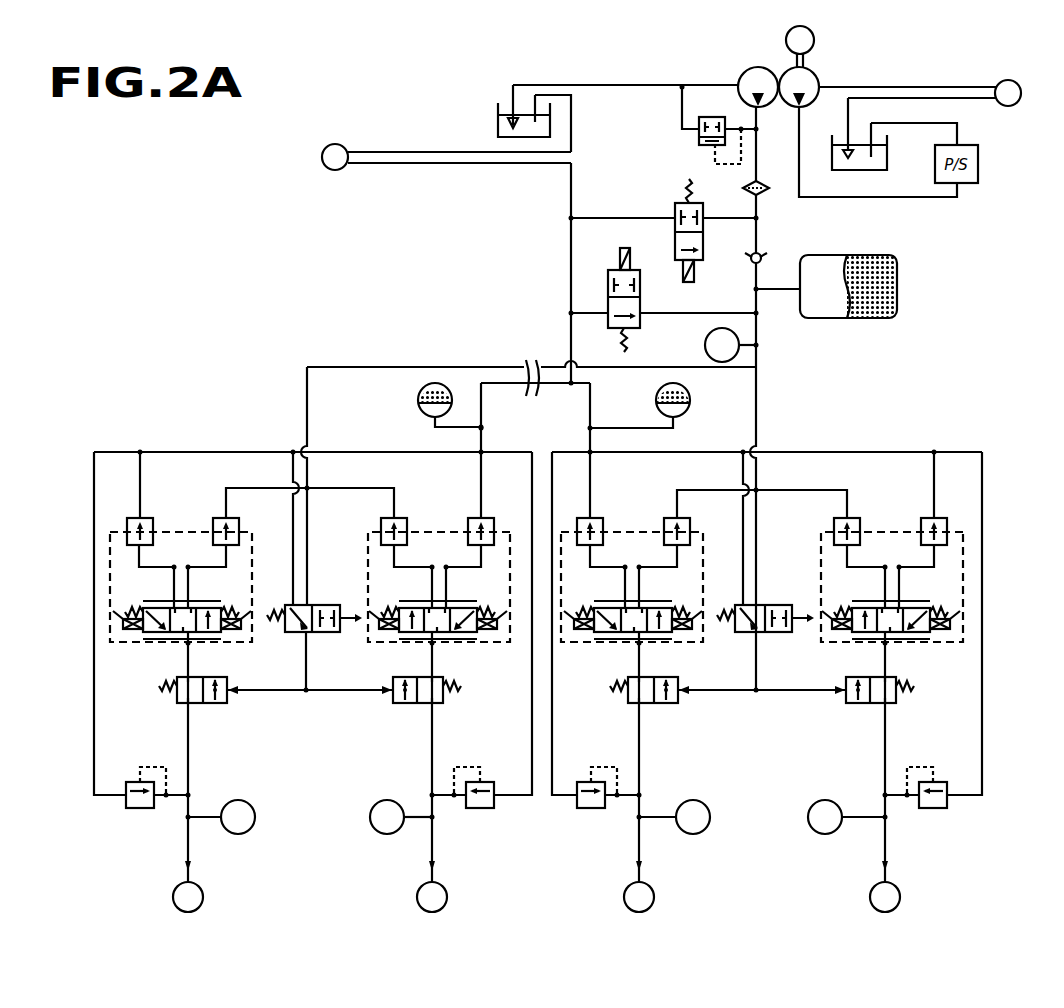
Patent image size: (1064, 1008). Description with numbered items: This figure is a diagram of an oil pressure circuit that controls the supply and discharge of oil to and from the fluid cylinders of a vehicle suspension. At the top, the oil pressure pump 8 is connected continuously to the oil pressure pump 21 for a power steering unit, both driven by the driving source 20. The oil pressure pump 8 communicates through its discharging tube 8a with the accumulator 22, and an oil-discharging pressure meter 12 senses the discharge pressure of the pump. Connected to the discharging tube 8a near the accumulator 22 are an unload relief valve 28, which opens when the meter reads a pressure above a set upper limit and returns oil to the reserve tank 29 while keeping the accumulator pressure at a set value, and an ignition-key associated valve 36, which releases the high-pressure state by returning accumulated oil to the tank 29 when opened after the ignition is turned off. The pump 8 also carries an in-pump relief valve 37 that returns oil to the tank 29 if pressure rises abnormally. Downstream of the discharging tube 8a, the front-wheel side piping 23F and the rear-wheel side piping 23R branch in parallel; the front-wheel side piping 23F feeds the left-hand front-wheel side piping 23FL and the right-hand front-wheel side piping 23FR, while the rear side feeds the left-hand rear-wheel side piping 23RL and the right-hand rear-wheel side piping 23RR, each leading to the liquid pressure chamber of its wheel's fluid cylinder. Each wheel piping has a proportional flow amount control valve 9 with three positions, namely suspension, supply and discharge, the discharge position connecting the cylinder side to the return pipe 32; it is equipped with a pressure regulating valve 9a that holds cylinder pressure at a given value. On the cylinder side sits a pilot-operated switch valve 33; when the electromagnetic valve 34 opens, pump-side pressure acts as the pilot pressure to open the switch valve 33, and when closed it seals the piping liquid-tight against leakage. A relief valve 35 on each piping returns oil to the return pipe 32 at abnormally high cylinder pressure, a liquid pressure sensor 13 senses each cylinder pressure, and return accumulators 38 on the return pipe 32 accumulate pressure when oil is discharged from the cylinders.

The oil pressure pump 8 is at (744, 76).
The discharging tube 8a is at (757, 332).
The proportional flow amount control valve 9 is at (228, 640).
The pressure regulating valve 9a is at (242, 519).
The oil-discharging pressure meter 12 is at (705, 346).
The liquid pressure sensor 13 is at (250, 829).
The driving source 20 is at (812, 43).
The oil pressure pump for power steering unit 21 is at (819, 84).
The accumulator 22 is at (897, 276).
The rear-wheel side piping 23R is at (317, 364).
The front-wheel side piping 23F is at (764, 432).
The right-hand rear-wheel side piping 23RR is at (190, 766).
The left-hand rear-wheel side piping 23RL is at (434, 736).
The right-hand front-wheel side piping 23FR is at (641, 746).
The left-hand front-wheel side piping 23FL is at (887, 751).
The unload relief valve 28 is at (675, 215).
The reserve tank 29 is at (497, 125).
The return pipe 32 is at (570, 236).
The switch valve 33 is at (177, 695).
The electromagnetic valve 34 is at (325, 633).
The relief valve 35 is at (141, 809).
The ignition-key associated valve 36 is at (608, 297).
The in-pump relief valve 37 is at (700, 148).
The return accumulator 38 is at (418, 403).